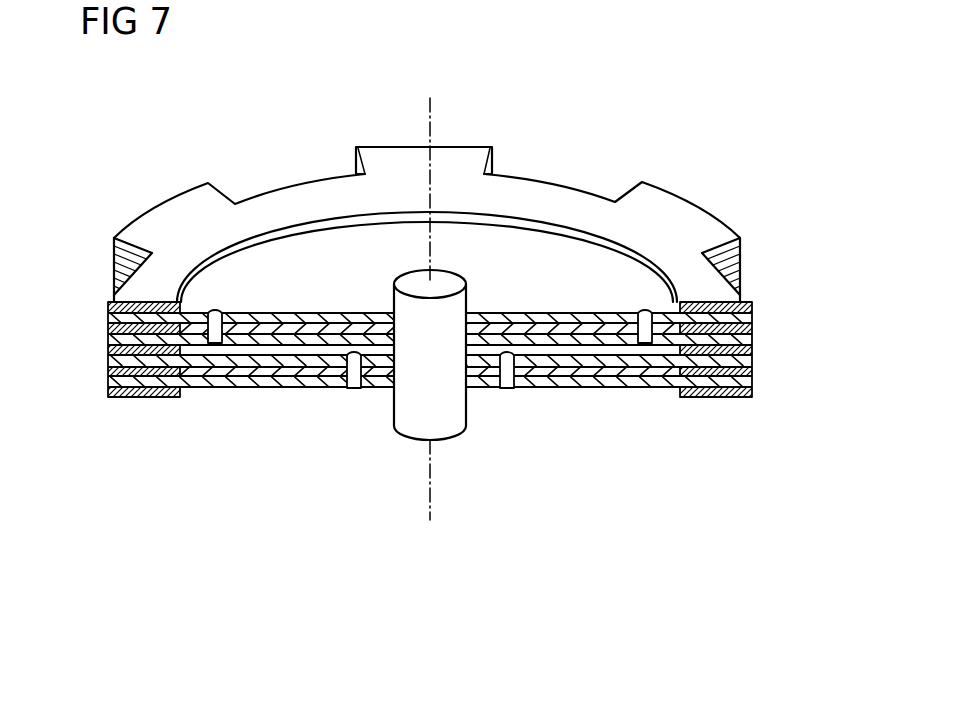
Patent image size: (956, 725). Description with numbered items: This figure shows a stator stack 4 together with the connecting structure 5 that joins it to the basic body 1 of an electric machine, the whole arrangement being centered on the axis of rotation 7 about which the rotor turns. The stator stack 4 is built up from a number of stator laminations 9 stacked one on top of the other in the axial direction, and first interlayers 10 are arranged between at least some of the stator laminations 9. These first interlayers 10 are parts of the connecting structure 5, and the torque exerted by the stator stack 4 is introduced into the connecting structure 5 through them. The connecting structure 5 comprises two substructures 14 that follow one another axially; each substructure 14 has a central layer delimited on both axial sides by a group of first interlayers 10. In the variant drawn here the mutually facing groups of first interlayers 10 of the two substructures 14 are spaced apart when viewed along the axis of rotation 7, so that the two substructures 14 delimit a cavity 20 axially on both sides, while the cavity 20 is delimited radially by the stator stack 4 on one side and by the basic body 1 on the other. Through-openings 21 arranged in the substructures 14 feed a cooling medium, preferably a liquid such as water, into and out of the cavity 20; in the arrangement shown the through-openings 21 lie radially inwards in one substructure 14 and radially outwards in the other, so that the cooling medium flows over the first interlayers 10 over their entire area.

The basic body 1 is at (440, 428).
The stator stack 4 is at (703, 163).
The connecting structure 5 is at (438, 396).
The axis of rotation 7 is at (431, 118).
The stator laminations 9 is at (108, 330).
The first interlayers 10 is at (752, 340).
The substructures 14 is at (332, 343).
The cavity 20 is at (278, 352).
The through-openings 21 is at (216, 345).